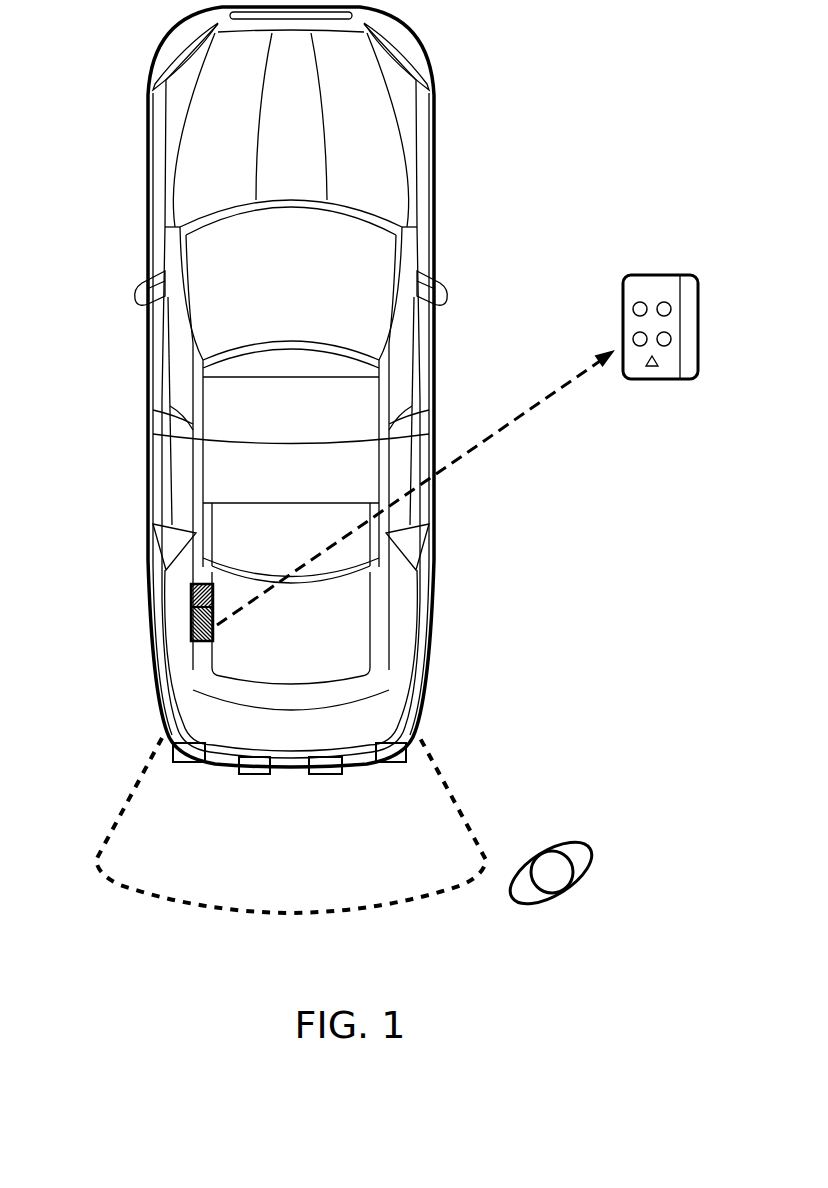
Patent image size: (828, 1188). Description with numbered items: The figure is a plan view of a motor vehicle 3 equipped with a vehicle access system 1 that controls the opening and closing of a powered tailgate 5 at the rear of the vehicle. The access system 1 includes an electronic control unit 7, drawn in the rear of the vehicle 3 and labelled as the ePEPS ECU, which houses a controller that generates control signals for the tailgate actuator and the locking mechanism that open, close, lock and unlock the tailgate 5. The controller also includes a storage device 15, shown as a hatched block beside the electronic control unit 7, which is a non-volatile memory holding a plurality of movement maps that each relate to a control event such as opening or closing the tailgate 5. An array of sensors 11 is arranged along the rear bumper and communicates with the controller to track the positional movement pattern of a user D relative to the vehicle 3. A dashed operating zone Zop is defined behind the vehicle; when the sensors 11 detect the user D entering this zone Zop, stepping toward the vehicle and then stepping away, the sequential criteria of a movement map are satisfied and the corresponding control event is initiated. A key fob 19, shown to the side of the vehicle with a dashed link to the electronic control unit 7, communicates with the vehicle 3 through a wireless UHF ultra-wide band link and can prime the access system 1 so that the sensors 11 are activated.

The vehicle access system 1 is at (540, 578).
The motor vehicle 3 is at (375, 153).
The powered tailgate 5 is at (363, 702).
The electronic control unit 7 is at (200, 628).
The sensors 11 is at (376, 743).
The storage device 15 is at (197, 594).
The key fob 19 is at (668, 275).
The user D is at (582, 858).
The operating zone Zop is at (291, 825).